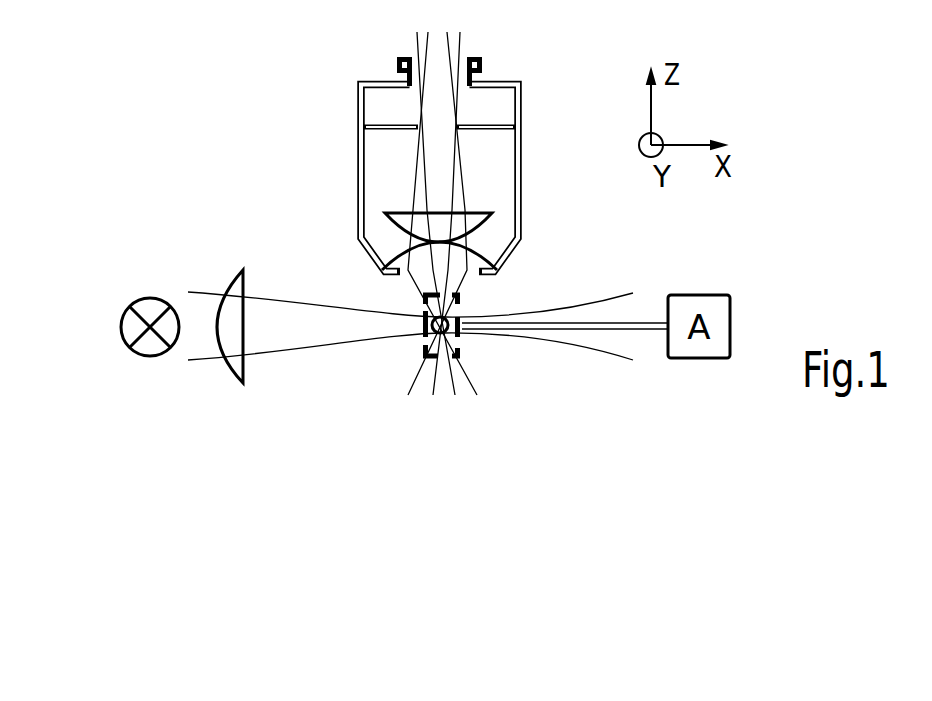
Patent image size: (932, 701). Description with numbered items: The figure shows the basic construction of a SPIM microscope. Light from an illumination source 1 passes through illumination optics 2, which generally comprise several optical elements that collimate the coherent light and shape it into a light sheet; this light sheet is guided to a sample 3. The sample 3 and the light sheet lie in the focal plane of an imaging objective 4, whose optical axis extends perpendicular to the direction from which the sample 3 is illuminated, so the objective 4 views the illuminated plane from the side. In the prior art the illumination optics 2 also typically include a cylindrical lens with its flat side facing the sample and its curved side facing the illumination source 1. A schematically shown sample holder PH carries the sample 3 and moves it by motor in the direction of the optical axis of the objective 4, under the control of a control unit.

The illumination source 1 is at (148, 299).
The illumination optics 2 is at (242, 270).
The sample 3 is at (457, 318).
The imaging objective 4 is at (370, 163).
The sample holder PH is at (460, 358).